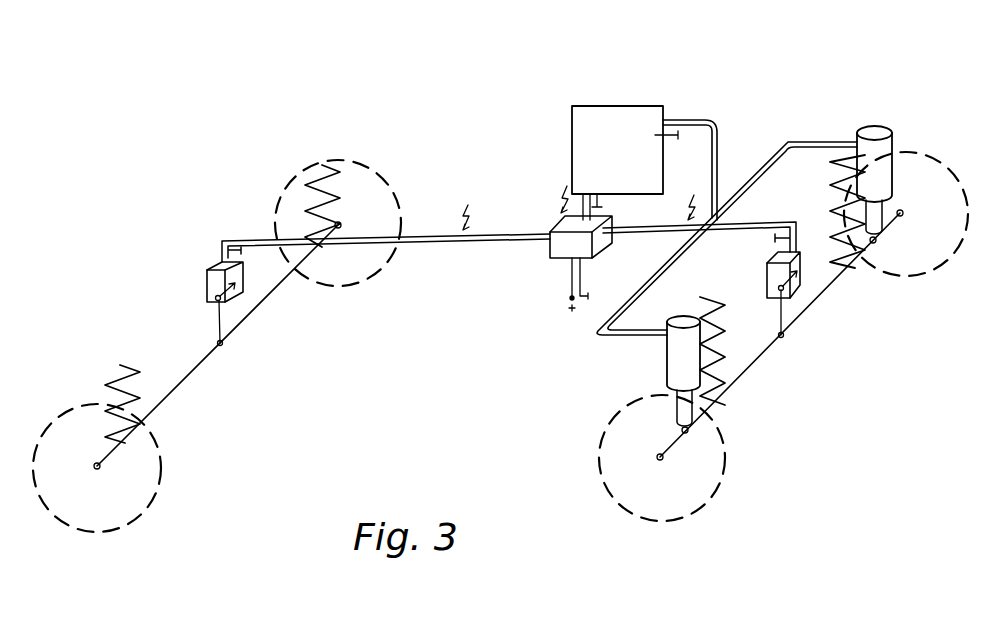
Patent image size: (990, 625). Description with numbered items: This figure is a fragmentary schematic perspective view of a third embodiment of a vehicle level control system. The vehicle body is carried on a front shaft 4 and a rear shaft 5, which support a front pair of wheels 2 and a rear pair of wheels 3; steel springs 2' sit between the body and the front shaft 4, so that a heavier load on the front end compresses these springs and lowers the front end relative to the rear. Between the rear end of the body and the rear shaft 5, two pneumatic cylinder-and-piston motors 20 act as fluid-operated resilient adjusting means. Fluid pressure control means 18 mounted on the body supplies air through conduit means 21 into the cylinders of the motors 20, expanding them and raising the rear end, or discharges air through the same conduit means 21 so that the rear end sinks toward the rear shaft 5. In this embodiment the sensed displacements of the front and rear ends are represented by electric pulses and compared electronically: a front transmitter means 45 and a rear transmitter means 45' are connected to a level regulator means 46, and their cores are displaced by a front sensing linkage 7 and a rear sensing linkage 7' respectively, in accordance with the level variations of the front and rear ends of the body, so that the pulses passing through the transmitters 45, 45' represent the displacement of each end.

The wheels 2 is at (221, 346).
The steel springs 2' is at (222, 282).
The wheels 3 is at (966, 204).
The front shaft 4 is at (205, 360).
The rear shaft 5 is at (770, 362).
The sensing linkage 7 is at (244, 326).
The sensing linkage 7' is at (802, 320).
The fluid pressure control means 18 is at (595, 112).
The pneumatic cylinder-and-piston motors 20 is at (885, 146).
The conduit means 21 is at (668, 267).
The front transmitter means 45 is at (353, 253).
The rear transmitter means 45' is at (739, 267).
The level regulator means 46 is at (552, 258).